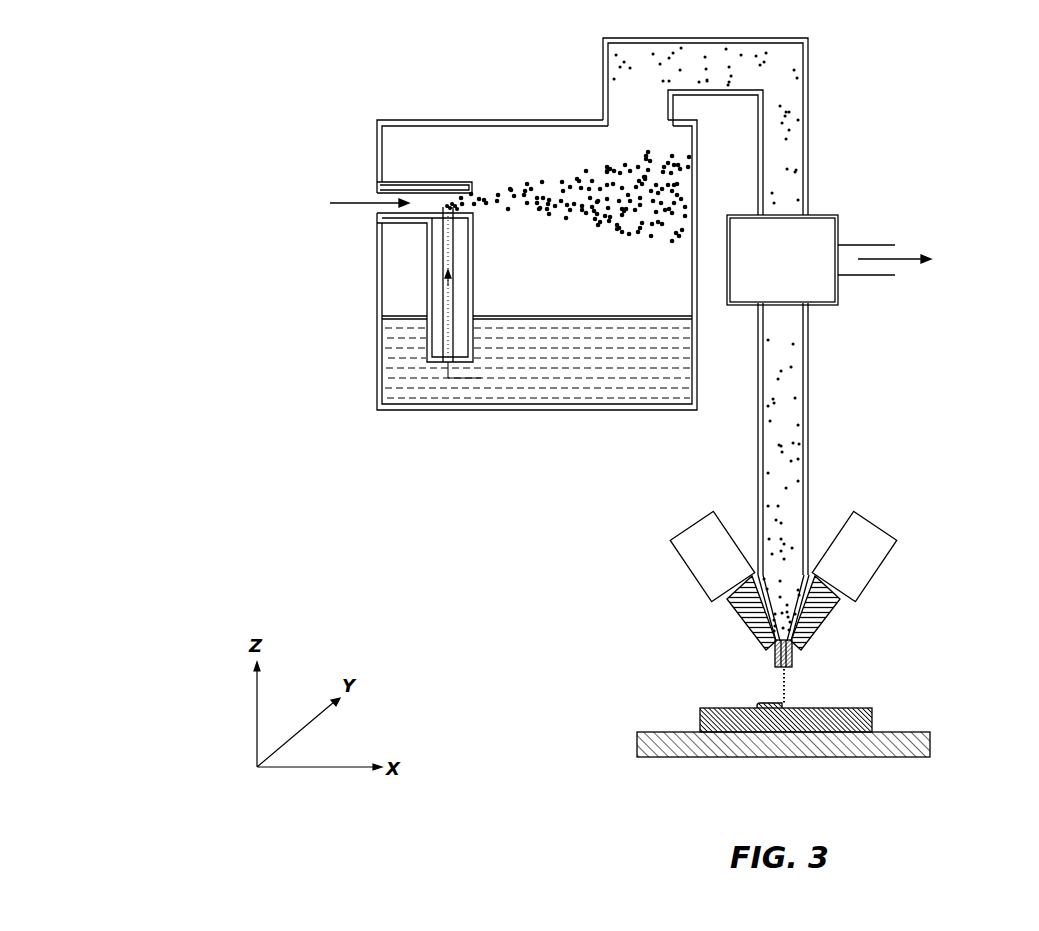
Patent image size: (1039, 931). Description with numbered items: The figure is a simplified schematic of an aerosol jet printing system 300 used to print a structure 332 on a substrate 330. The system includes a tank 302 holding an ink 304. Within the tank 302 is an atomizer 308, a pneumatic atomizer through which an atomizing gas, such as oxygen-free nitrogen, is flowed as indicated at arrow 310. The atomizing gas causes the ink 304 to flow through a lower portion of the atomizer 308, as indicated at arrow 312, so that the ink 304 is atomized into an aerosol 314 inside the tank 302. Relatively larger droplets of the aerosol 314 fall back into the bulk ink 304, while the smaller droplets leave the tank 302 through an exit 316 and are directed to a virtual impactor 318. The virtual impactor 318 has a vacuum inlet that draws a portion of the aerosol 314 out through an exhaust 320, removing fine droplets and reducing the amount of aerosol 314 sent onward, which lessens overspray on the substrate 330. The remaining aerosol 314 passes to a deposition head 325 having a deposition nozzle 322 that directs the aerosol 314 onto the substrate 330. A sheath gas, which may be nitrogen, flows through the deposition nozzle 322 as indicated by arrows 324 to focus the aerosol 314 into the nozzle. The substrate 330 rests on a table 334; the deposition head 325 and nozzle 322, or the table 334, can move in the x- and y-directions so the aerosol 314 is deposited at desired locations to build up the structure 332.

The aerosol jet printing system 300 is at (306, 123).
The tank 302 is at (468, 120).
The ink 304 is at (581, 376).
The atomizer 308 is at (425, 203).
The arrow indicating flow of atomizing gas 310 is at (348, 207).
The arrow indicating flow of ink 312 is at (447, 332).
The aerosol 314 is at (646, 226).
The exit 316 is at (602, 70).
The virtual impactor 318 is at (801, 271).
The exhaust 320 is at (902, 262).
The deposition nozzle 322 is at (795, 662).
The arrows indicating sheath gas flow 324 is at (733, 614).
The deposition head 325 is at (834, 643).
The substrate 330 is at (873, 723).
The structure 332 is at (757, 703).
The table 334 is at (930, 745).